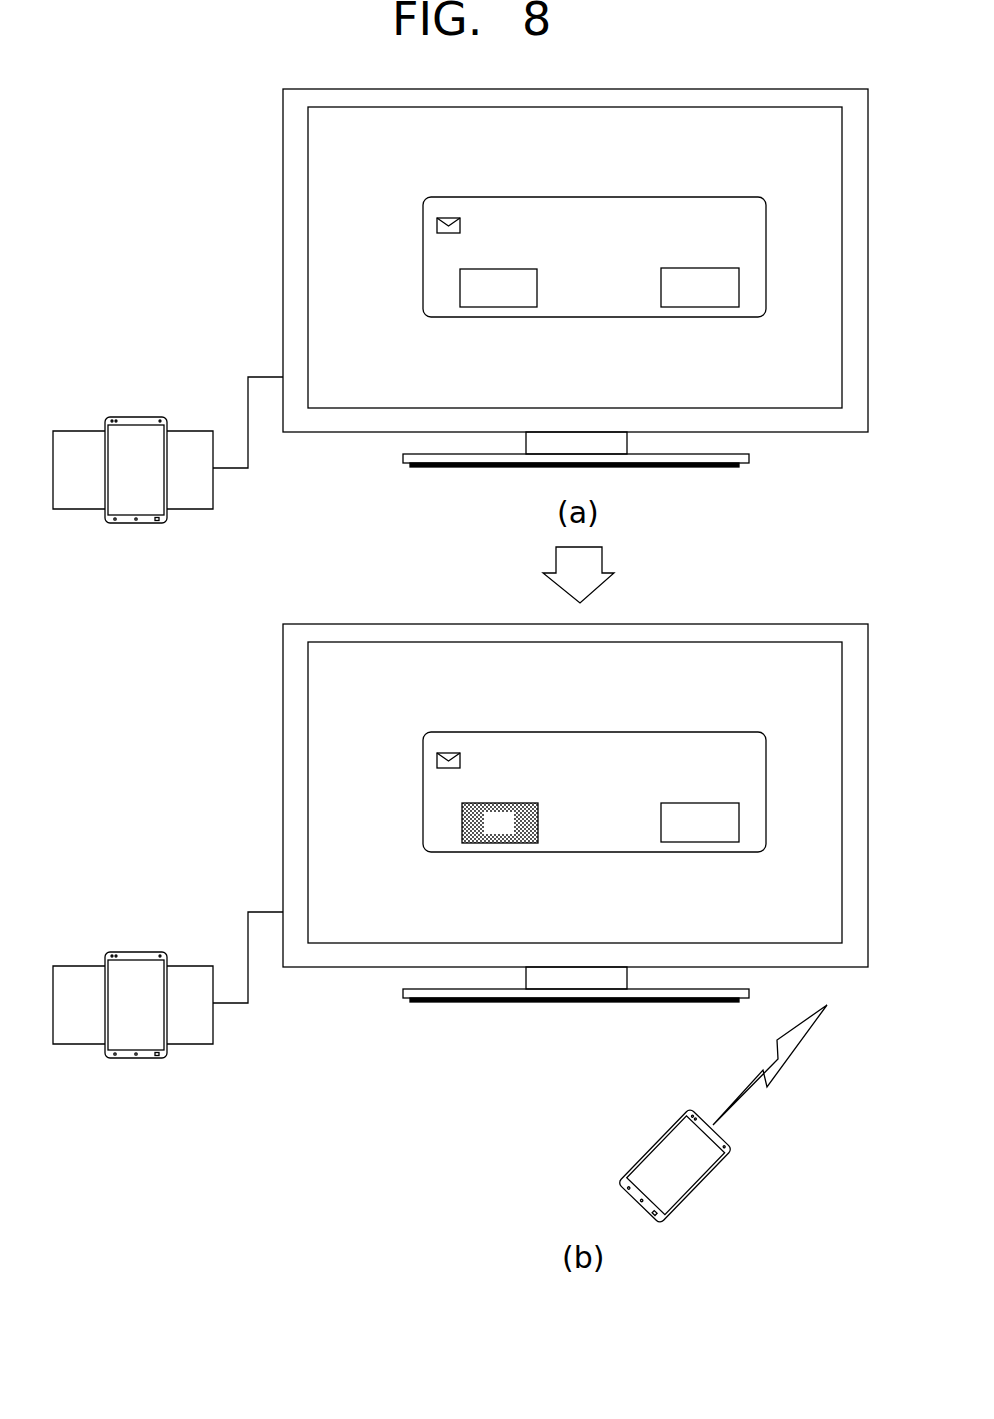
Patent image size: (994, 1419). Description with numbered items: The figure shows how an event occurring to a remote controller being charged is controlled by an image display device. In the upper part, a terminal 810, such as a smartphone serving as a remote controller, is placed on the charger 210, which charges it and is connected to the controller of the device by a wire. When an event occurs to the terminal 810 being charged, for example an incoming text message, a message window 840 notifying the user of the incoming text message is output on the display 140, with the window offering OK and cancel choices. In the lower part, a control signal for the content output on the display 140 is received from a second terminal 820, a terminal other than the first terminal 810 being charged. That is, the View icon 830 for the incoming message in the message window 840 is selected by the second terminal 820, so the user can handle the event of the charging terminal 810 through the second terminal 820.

The display 140 is at (283, 160).
The message window 840 is at (422, 253).
The View icon 830 is at (462, 819).
The terminal 810 is at (137, 417).
The charger 210 is at (213, 490).
The second terminal 820 is at (697, 1188).